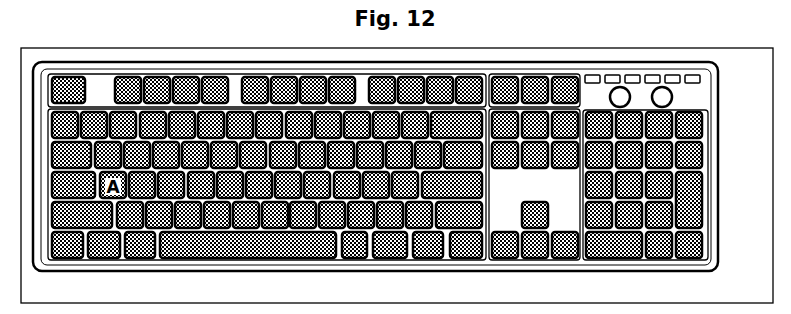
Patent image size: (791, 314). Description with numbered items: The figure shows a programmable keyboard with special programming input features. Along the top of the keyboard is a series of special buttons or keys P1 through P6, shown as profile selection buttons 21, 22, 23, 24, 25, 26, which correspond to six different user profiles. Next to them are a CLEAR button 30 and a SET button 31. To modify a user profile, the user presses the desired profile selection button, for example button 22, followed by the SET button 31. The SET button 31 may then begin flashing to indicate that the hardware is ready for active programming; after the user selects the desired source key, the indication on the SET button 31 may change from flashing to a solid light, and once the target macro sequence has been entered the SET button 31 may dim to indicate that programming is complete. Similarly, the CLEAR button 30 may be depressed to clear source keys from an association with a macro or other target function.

The profile selection button P1 21 is at (592, 75).
The profile selection button P2 22 is at (612, 75).
The profile selection button P3 23 is at (632, 75).
The profile selection button P4 24 is at (652, 75).
The profile selection button P5 25 is at (672, 75).
The profile selection button P6 26 is at (692, 75).
The CLEAR button 30 is at (634, 108).
The SET button 31 is at (678, 89).